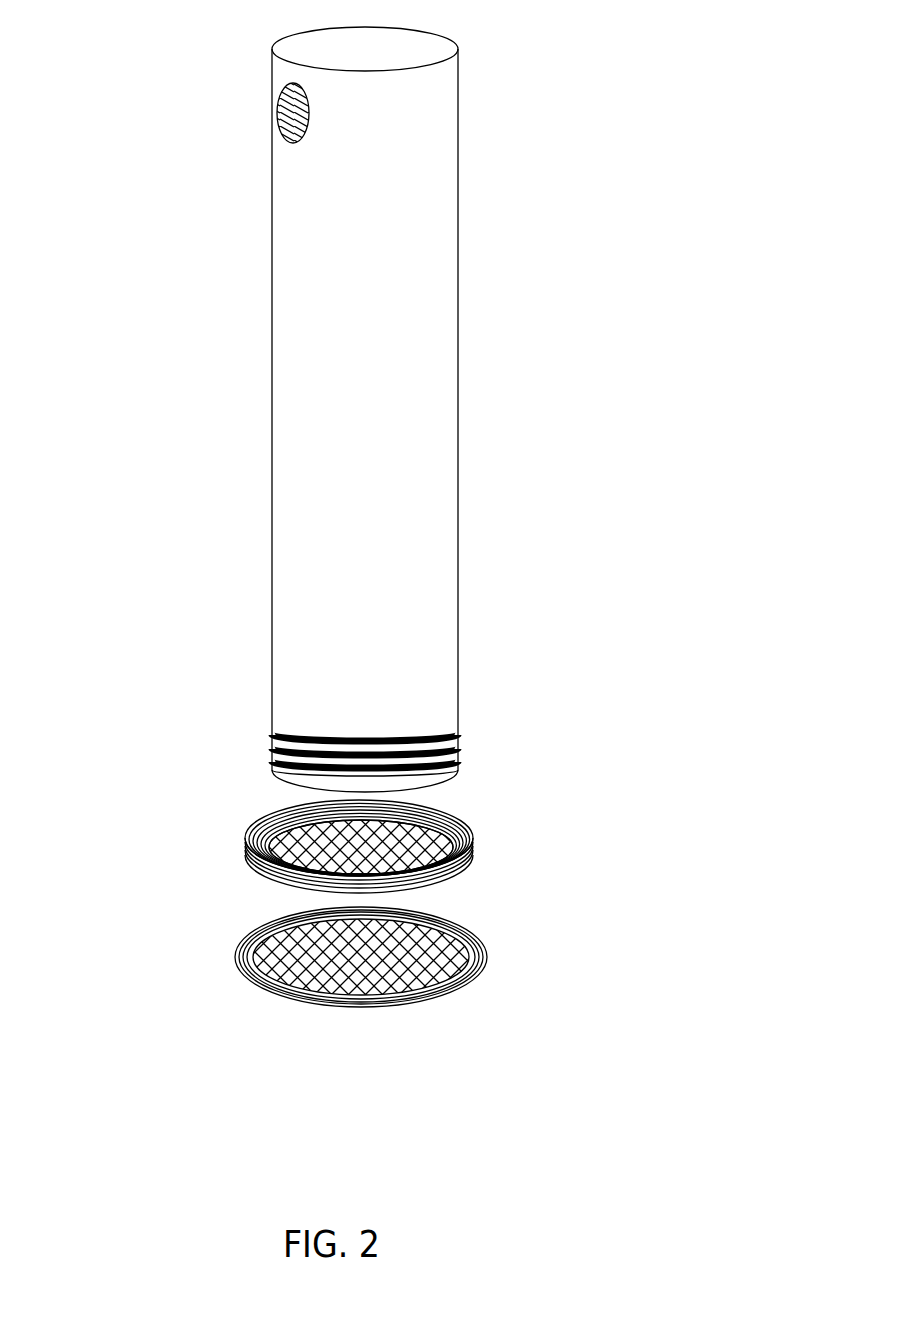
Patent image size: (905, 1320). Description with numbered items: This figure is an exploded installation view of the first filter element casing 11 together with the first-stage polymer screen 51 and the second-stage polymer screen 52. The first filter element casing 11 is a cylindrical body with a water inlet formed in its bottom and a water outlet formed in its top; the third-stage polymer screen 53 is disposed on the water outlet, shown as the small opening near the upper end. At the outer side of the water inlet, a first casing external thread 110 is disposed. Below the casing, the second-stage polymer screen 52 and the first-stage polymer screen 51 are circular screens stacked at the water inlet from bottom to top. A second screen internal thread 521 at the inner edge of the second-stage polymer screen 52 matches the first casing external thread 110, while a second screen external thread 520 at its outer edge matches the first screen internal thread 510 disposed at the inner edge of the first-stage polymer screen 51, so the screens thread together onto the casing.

The first filter element casing 11 is at (420, 385).
The third-stage polymer screen 53 is at (290, 120).
The first casing external thread 110 is at (273, 752).
The second-stage polymer screen 52 is at (357, 852).
The second screen internal thread 521 is at (430, 807).
The second screen external thread 520 is at (432, 873).
The first-stage polymer screen 51 is at (381, 1021).
The first screen internal thread 510 is at (450, 990).